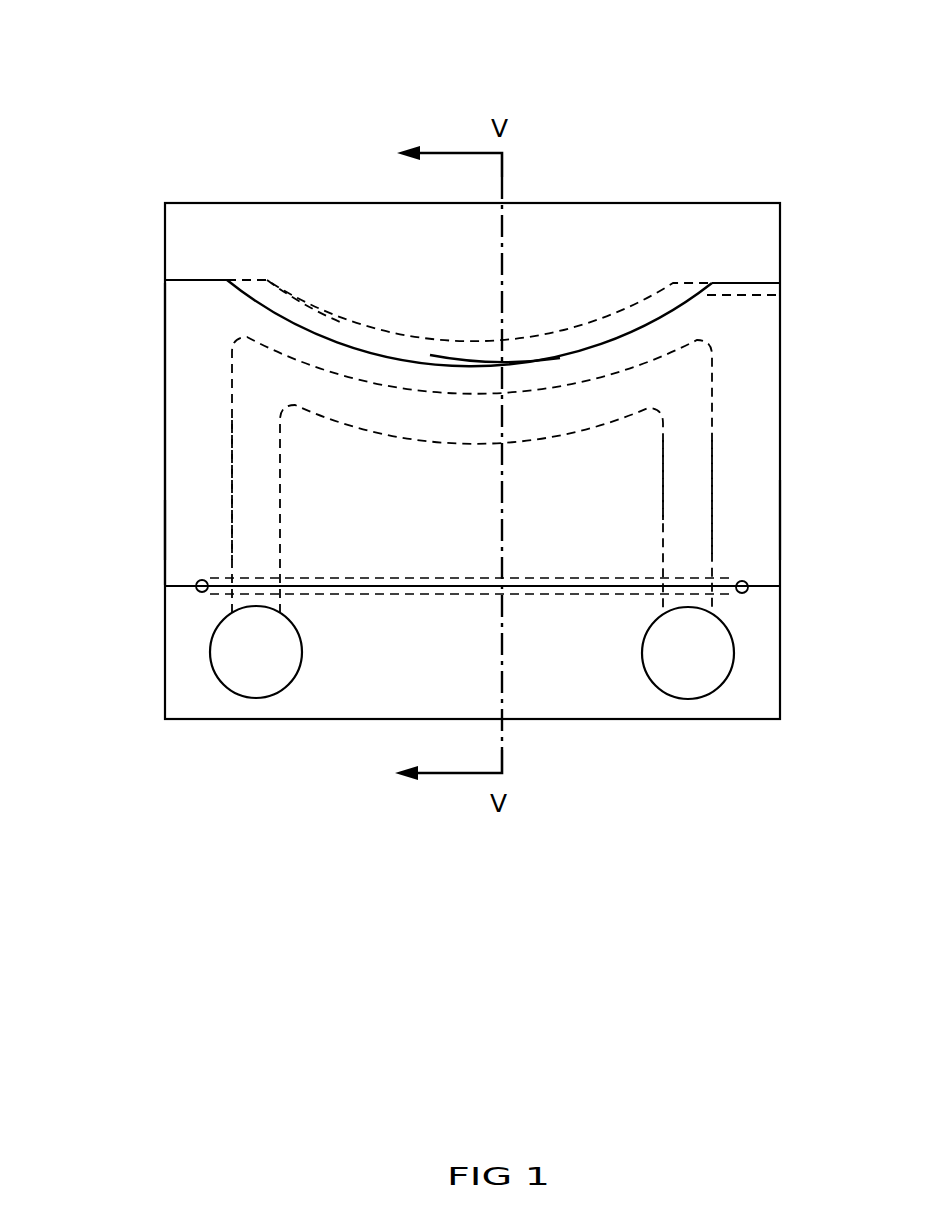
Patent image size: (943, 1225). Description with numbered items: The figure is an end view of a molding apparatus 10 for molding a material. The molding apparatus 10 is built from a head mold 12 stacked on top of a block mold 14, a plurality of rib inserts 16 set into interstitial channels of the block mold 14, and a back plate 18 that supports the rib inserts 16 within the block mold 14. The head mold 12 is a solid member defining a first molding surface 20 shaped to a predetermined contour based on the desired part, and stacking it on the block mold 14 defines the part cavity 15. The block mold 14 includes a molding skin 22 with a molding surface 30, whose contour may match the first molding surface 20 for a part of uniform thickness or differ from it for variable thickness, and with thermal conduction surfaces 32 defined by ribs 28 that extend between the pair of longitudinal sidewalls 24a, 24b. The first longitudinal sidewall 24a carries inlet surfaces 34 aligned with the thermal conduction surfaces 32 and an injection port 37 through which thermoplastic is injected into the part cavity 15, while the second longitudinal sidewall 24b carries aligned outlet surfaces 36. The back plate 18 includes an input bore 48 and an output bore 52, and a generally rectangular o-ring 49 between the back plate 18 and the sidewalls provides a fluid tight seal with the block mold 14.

The molding apparatus 10 is at (122, 66).
The head mold 12 is at (175, 246).
The block mold 14 is at (172, 433).
The part cavity 15 is at (554, 342).
The rib inserts 16 is at (648, 463).
The back plate 18 is at (177, 703).
The first molding surface 20 is at (300, 300).
The molding skin 22 is at (603, 352).
The first longitudinal sidewall 24a is at (775, 512).
The second longitudinal sidewall 24b is at (182, 533).
The ribs 28 is at (692, 395).
The molding surface 30 is at (397, 355).
The thermal conduction surfaces 32 is at (559, 388).
The inlet surfaces 34 is at (712, 483).
The outlet surfaces 36 is at (232, 468).
The injection port 37 is at (772, 291).
The input bore 48 is at (712, 689).
The o-ring 49 is at (748, 593).
The output bore 52 is at (282, 688).